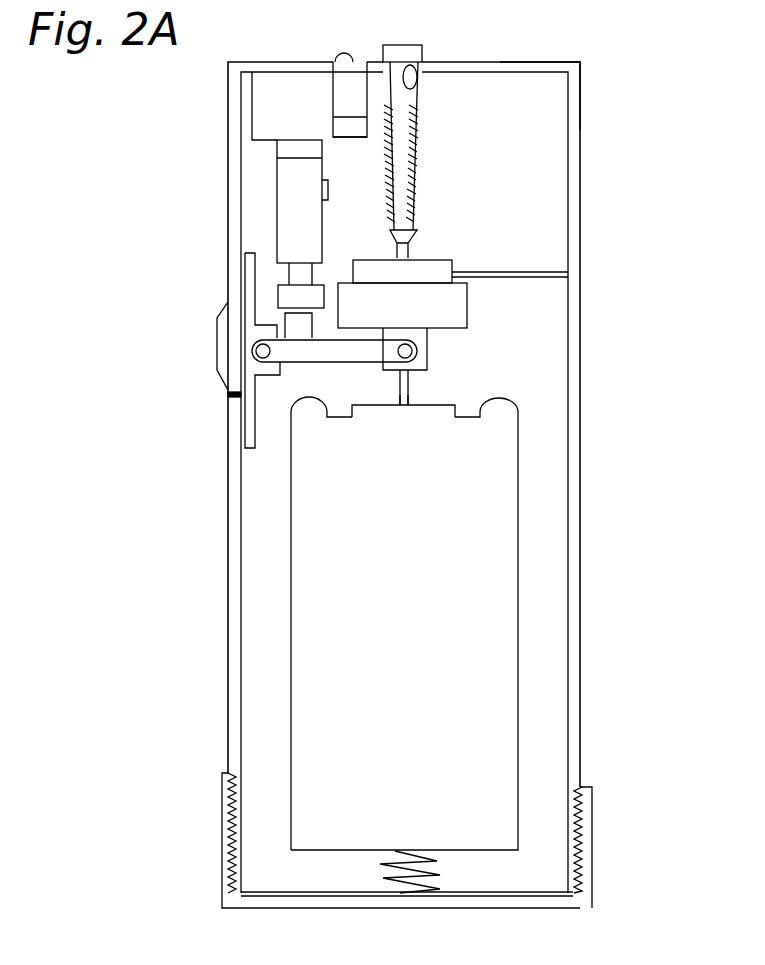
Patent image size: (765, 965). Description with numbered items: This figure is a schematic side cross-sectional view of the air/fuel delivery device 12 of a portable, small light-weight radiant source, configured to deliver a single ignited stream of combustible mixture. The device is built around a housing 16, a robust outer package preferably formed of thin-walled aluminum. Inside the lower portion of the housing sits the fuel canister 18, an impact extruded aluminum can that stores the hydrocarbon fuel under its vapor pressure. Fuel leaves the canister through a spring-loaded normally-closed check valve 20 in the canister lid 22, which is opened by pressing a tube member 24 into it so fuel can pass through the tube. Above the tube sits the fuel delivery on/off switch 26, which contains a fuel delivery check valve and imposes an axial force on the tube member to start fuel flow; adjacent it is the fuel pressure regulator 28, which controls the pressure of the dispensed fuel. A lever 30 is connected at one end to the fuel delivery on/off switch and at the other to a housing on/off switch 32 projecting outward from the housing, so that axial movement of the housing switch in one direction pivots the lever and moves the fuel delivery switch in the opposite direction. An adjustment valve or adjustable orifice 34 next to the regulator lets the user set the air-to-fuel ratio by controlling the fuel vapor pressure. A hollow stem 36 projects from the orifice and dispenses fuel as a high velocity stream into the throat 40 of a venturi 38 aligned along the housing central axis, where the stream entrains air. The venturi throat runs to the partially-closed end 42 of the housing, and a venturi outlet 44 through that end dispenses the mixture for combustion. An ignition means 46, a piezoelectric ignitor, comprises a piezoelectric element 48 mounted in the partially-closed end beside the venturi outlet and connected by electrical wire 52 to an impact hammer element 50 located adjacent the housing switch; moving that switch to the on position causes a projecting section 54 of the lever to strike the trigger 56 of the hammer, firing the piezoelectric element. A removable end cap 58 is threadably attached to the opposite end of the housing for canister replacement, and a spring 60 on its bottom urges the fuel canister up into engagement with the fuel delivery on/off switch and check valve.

The air/fuel delivery device 12 is at (222, 574).
The housing 16 is at (228, 504).
The fuel canister 18 is at (497, 578).
The valve 20 is at (386, 398).
The plate 22 is at (403, 405).
The tube member 24 is at (410, 385).
The fuel delivery on/off switch 26 is at (418, 347).
The fuel pressure regulator 28 is at (445, 297).
The lever 30 is at (310, 343).
The housing on/off switch 32 is at (217, 372).
The adjustment valve or adjustable orifice 34 is at (572, 272).
The hollow stem 36 is at (413, 257).
The venturi 38 is at (418, 170).
The venturi throat 40 is at (422, 55).
The partially-closed end 42 is at (550, 64).
The venturi outlet 44 is at (404, 46).
The ignition means 46 is at (330, 56).
The piezoelectric element 48 is at (347, 90).
The impact hammer element 50 is at (290, 186).
The electrical wire 52 is at (350, 137).
The projecting section 54 is at (258, 332).
The trigger 56 is at (283, 298).
The removable end cap 58 is at (575, 908).
The spring 60 is at (385, 878).